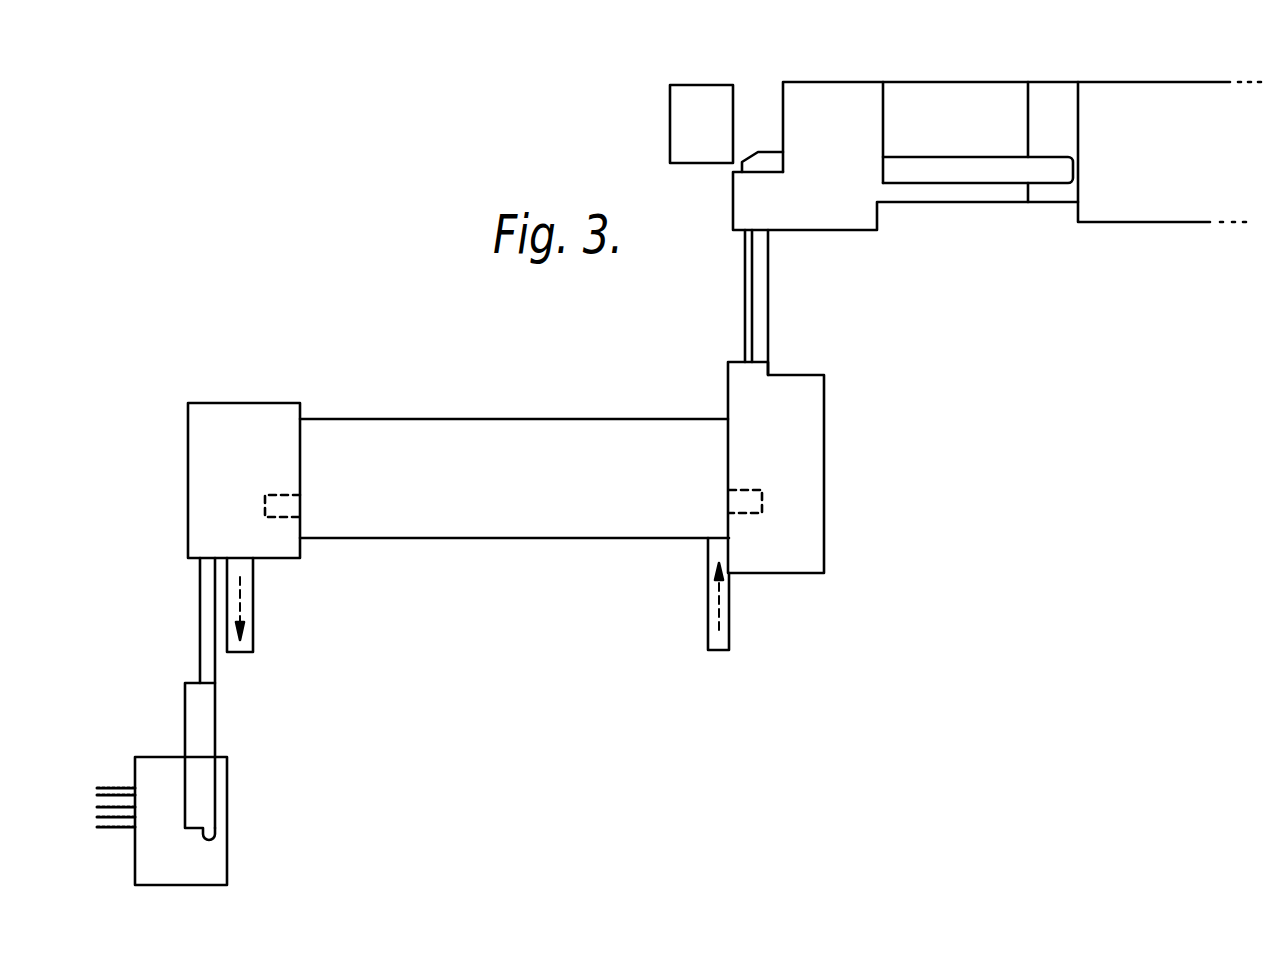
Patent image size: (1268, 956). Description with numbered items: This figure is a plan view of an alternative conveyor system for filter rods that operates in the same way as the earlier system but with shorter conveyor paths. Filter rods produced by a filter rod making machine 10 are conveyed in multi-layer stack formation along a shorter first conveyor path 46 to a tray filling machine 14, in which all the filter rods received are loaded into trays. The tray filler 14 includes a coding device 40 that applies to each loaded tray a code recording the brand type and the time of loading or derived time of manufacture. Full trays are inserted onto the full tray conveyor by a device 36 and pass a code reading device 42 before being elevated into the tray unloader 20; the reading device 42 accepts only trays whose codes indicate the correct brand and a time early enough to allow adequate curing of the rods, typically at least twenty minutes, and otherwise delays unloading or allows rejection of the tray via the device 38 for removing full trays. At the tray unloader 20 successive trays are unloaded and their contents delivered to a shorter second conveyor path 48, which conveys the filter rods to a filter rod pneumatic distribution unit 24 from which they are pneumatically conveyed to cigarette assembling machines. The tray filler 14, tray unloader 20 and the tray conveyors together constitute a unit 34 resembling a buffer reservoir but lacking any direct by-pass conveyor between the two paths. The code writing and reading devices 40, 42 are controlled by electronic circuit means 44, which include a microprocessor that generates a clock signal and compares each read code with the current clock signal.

The filter rod making machine 10 is at (920, 93).
The tray filling machine 14 is at (790, 428).
The tray unloader 20 is at (227, 417).
The filter rod pneumatic distribution unit 24 is at (225, 840).
The unit 34 is at (397, 392).
The device for inserting full trays 36 is at (733, 630).
The device for removing full trays 38 is at (250, 600).
The coding device 40 is at (762, 500).
The code reading device 42 is at (265, 506).
The electronic circuit means 44 is at (672, 113).
The first conveyor path 46 is at (762, 317).
The second conveyor path 48 is at (207, 600).